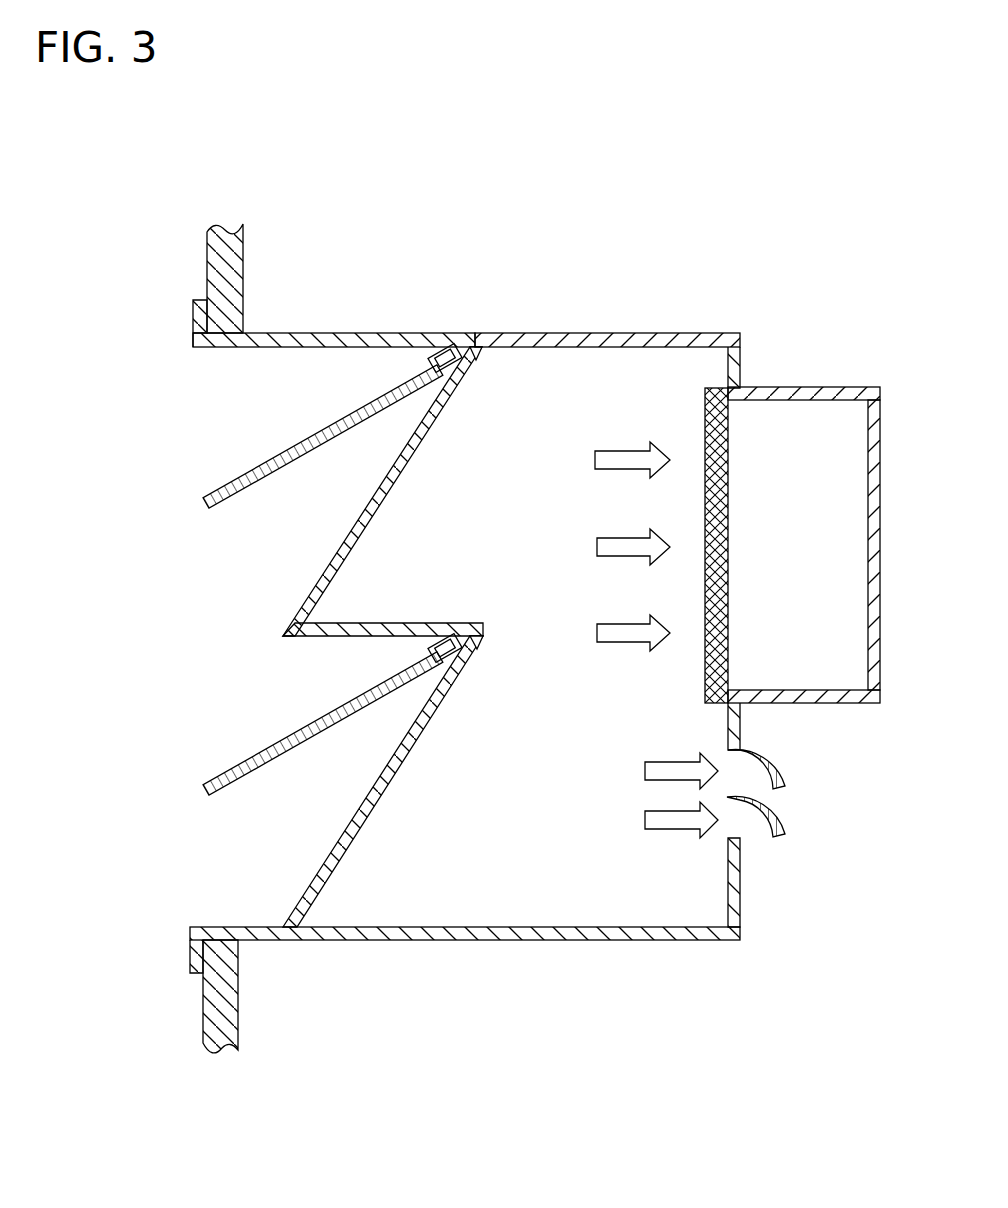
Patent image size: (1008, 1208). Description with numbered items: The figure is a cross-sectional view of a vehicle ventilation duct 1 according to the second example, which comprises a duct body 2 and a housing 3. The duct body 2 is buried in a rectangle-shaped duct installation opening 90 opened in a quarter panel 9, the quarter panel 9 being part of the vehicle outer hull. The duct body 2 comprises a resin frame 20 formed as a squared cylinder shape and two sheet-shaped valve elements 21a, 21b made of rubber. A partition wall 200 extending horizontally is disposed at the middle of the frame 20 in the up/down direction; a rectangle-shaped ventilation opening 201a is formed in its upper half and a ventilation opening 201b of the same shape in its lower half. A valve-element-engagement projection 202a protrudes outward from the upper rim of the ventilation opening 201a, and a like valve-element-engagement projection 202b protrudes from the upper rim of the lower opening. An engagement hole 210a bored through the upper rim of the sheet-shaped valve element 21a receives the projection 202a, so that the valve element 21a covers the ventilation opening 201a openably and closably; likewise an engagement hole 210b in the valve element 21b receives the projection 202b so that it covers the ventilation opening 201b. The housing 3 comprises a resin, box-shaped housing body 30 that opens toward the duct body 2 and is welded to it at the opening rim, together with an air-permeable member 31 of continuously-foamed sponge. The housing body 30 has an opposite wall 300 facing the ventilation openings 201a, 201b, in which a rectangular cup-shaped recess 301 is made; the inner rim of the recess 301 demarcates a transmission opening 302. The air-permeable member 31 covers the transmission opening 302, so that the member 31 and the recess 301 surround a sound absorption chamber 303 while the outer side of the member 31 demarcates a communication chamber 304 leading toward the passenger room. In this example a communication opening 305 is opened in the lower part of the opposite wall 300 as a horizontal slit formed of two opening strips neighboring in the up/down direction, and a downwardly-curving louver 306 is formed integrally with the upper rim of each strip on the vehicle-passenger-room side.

The ventilation duct 1 is at (590, 218).
The duct body 2 is at (384, 256).
The housing 3 is at (710, 296).
The quarter panel 9 is at (220, 232).
The duct installation opening 90 is at (222, 347).
The frame 20 is at (318, 333).
The partition wall 200 is at (398, 623).
The ventilation opening 201a is at (316, 608).
The ventilation opening 201b is at (306, 903).
The valve-element-engagement projection 202a is at (432, 358).
The valve-element-engagement projection 202b is at (427, 650).
The engagement hole 210a is at (470, 350).
The engagement hole 210b is at (483, 636).
The sheet-shaped valve element 21a is at (262, 462).
The sheet-shaped valve element 21b is at (240, 768).
The housing body 30 is at (556, 333).
The opposite wall 300 is at (727, 893).
The recess 301 is at (780, 390).
The transmission opening 302 is at (732, 690).
The sound absorption chamber 303 is at (832, 576).
The communication chamber 304 is at (614, 716).
The communication opening 305 is at (730, 838).
The louver 306 is at (783, 800).
The air-permeable member 31 is at (705, 492).